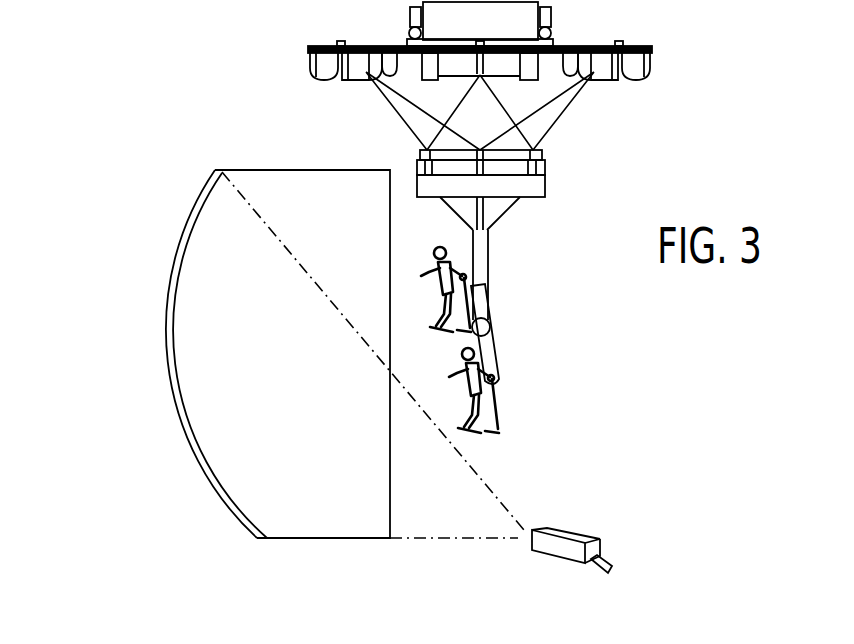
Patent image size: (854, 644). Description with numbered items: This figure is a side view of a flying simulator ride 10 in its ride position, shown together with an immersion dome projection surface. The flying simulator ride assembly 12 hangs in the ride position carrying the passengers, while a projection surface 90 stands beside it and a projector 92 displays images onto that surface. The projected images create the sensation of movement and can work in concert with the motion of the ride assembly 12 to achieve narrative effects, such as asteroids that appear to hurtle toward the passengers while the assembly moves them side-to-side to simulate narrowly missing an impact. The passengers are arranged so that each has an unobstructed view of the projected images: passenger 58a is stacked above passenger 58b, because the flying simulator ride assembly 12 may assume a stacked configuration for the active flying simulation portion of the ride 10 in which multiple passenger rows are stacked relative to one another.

The flying simulator ride 10 is at (112, 184).
The flying simulator ride assembly 12 is at (578, 159).
The passenger 58a is at (452, 268).
The passenger 58b is at (498, 366).
The projection surface 90 is at (197, 195).
The projector 92 is at (568, 538).